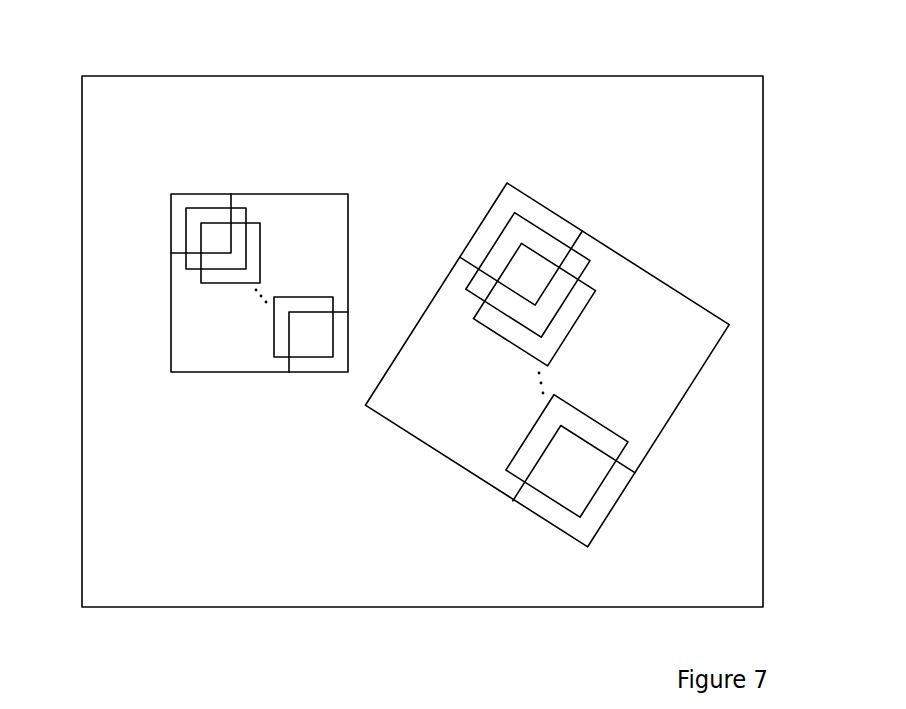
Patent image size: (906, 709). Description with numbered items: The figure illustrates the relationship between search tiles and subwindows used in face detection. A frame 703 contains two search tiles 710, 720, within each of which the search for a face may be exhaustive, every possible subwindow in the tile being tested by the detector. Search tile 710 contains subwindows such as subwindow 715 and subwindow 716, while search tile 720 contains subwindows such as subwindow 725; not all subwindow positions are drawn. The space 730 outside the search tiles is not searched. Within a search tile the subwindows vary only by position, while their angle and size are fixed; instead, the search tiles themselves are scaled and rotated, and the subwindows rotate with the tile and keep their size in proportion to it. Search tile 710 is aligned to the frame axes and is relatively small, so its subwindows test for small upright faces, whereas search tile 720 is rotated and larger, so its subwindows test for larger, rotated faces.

The frame 703 is at (112, 75).
The search tile 710 is at (223, 286).
The subwindow 715 is at (239, 212).
The subwindow 716 is at (285, 357).
The search tile 720 is at (547, 356).
The subwindow 725 is at (556, 214).
The space outside the search tiles 730 is at (434, 591).